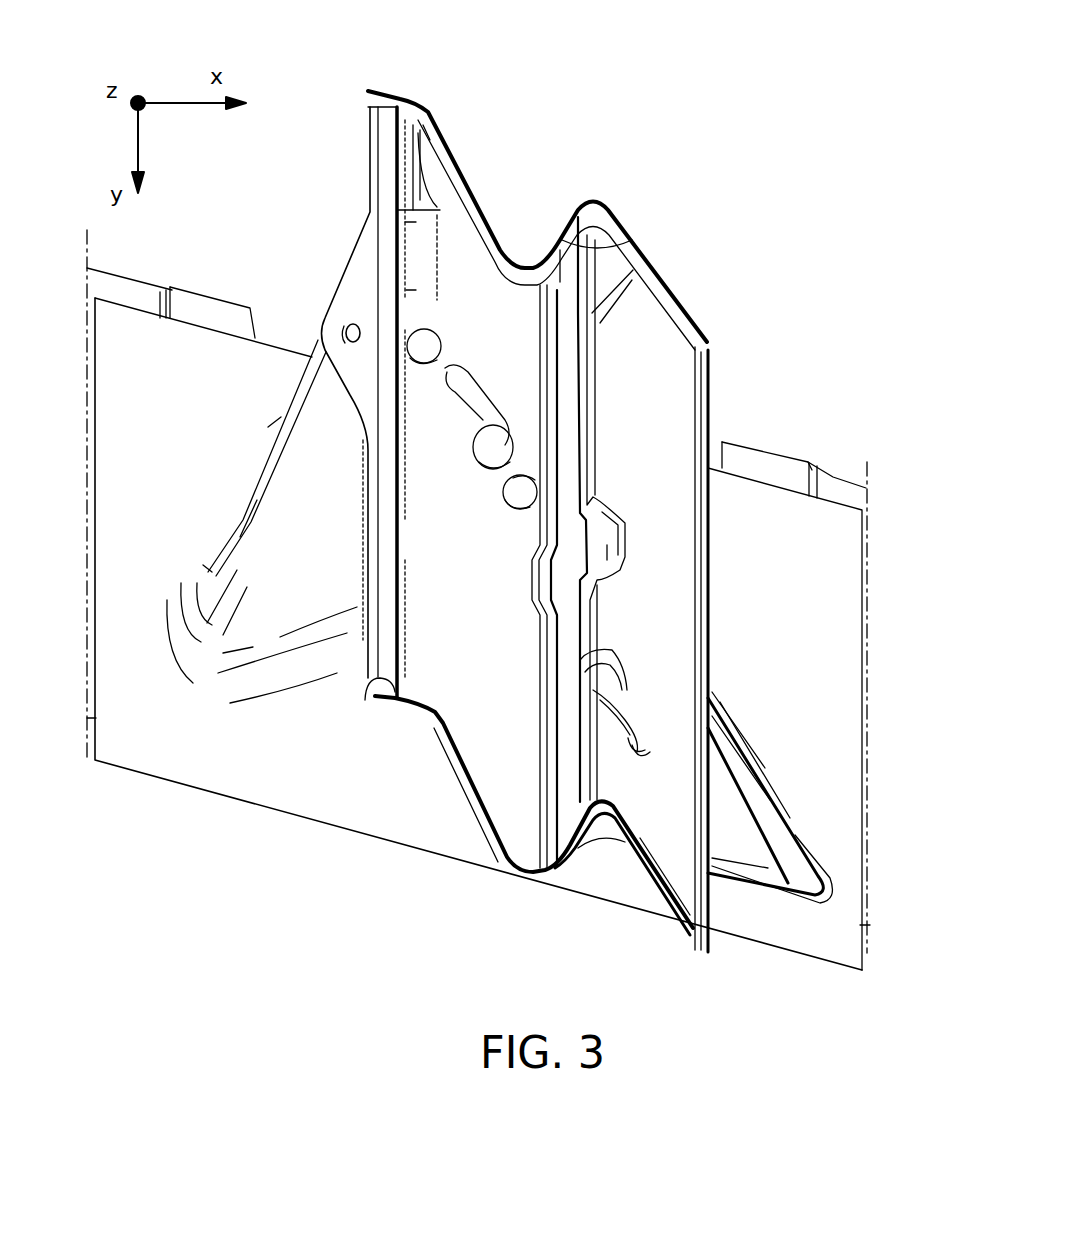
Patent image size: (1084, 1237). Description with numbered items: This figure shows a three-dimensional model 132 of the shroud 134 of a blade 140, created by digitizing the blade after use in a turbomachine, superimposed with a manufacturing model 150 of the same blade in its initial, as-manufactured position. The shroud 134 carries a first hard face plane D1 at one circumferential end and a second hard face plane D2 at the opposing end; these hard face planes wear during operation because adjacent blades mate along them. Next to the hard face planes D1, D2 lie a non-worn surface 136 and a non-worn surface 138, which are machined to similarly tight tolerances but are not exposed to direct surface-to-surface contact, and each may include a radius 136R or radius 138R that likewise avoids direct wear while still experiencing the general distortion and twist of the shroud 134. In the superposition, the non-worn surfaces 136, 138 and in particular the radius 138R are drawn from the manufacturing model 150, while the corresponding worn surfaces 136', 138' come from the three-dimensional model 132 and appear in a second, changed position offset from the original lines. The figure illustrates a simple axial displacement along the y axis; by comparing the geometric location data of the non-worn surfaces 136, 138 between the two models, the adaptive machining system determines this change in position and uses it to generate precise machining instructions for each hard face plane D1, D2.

The 3D model 132 is at (434, 92).
The shroud 134 is at (640, 417).
The non-worn surface 136 is at (521, 224).
The worn surface 136' is at (550, 160).
The radius 136R is at (555, 262).
The non-worn surface 138 is at (517, 827).
The worn surface 138' is at (541, 839).
The radius 138R is at (612, 803).
The blade 140 is at (300, 515).
The manufacturing model 150 is at (670, 573).
The first hard face plane D1 is at (627, 232).
The second hard face plane D2 is at (580, 850).